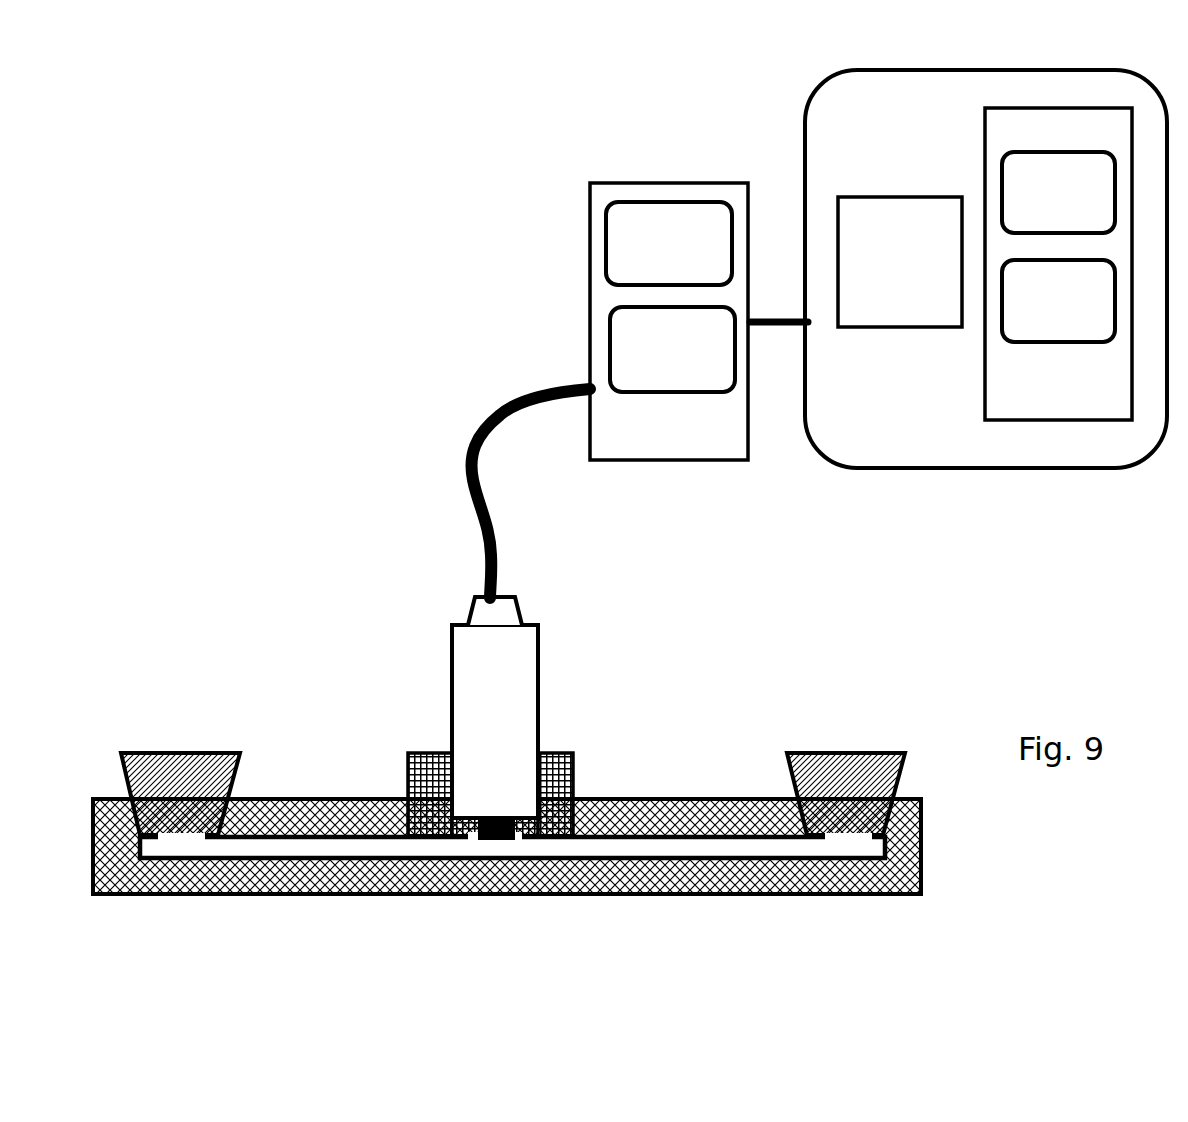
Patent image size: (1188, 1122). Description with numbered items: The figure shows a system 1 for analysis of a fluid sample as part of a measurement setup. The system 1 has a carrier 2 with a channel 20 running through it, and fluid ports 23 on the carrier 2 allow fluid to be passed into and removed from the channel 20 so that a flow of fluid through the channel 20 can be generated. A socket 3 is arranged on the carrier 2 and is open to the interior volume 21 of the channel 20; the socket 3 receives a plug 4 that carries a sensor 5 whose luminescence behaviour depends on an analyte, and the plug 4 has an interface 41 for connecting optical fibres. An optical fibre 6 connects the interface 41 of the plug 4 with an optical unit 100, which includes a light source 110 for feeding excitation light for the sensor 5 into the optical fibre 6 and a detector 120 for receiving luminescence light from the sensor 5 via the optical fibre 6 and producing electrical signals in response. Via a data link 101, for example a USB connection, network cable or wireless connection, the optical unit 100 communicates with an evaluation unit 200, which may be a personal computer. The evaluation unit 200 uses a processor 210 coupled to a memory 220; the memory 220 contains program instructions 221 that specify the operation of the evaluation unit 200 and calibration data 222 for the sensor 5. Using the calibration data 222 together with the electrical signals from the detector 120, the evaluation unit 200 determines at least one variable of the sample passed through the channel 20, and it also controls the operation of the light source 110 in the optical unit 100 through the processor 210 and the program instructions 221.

The system 1 is at (293, 621).
The carrier 2 is at (347, 800).
The channel 20 is at (281, 858).
The interior volume 21 is at (366, 840).
The fluid port 23 is at (182, 753).
The socket 3 is at (424, 752).
The plug 4 is at (539, 676).
The interface 41 is at (521, 612).
The sensor 5 is at (540, 820).
The optical fibre 6 is at (485, 418).
The optical unit 100 is at (641, 433).
The data link 101 is at (775, 319).
The light source 110 is at (641, 368).
The detector 120 is at (640, 261).
The evaluation unit 200 is at (887, 435).
The processor 210 is at (872, 279).
The memory 220 is at (1024, 401).
The program instructions 221 is at (1024, 326).
The calibration data 222 is at (1024, 209).